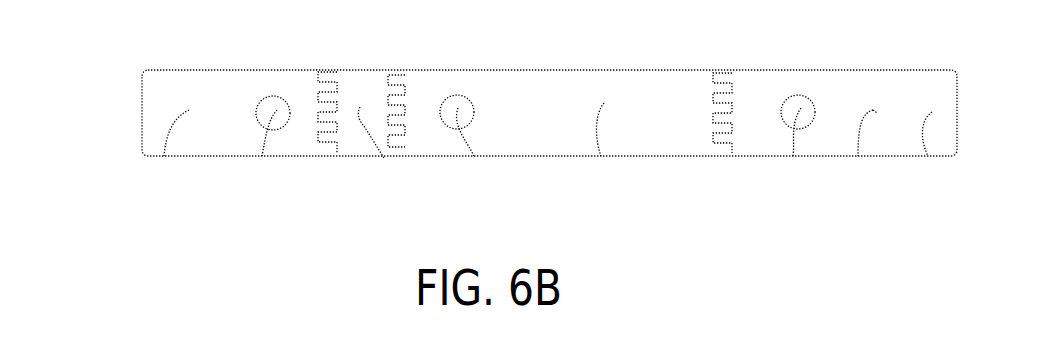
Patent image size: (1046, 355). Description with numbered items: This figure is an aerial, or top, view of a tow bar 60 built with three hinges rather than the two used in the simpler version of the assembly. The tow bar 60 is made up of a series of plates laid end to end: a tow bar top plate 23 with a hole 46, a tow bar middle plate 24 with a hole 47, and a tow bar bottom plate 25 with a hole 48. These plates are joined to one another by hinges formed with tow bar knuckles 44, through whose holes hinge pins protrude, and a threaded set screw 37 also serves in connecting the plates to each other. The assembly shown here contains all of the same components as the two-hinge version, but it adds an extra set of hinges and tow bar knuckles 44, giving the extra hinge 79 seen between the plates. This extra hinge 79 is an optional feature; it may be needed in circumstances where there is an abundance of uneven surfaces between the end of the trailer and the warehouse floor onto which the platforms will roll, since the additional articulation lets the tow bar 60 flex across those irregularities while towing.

The tow bar 60 is at (128, 119).
The tow bar top plate 23 is at (164, 156).
The hole 46 is at (262, 156).
The tow bar knuckles 44 is at (323, 125).
The extra hinge 79 is at (384, 158).
The hole 47 is at (474, 156).
The tow bar middle plate 24 is at (601, 156).
The hole 48 is at (793, 156).
The threaded set screw 37 is at (858, 156).
The tow bar bottom plate 25 is at (928, 156).